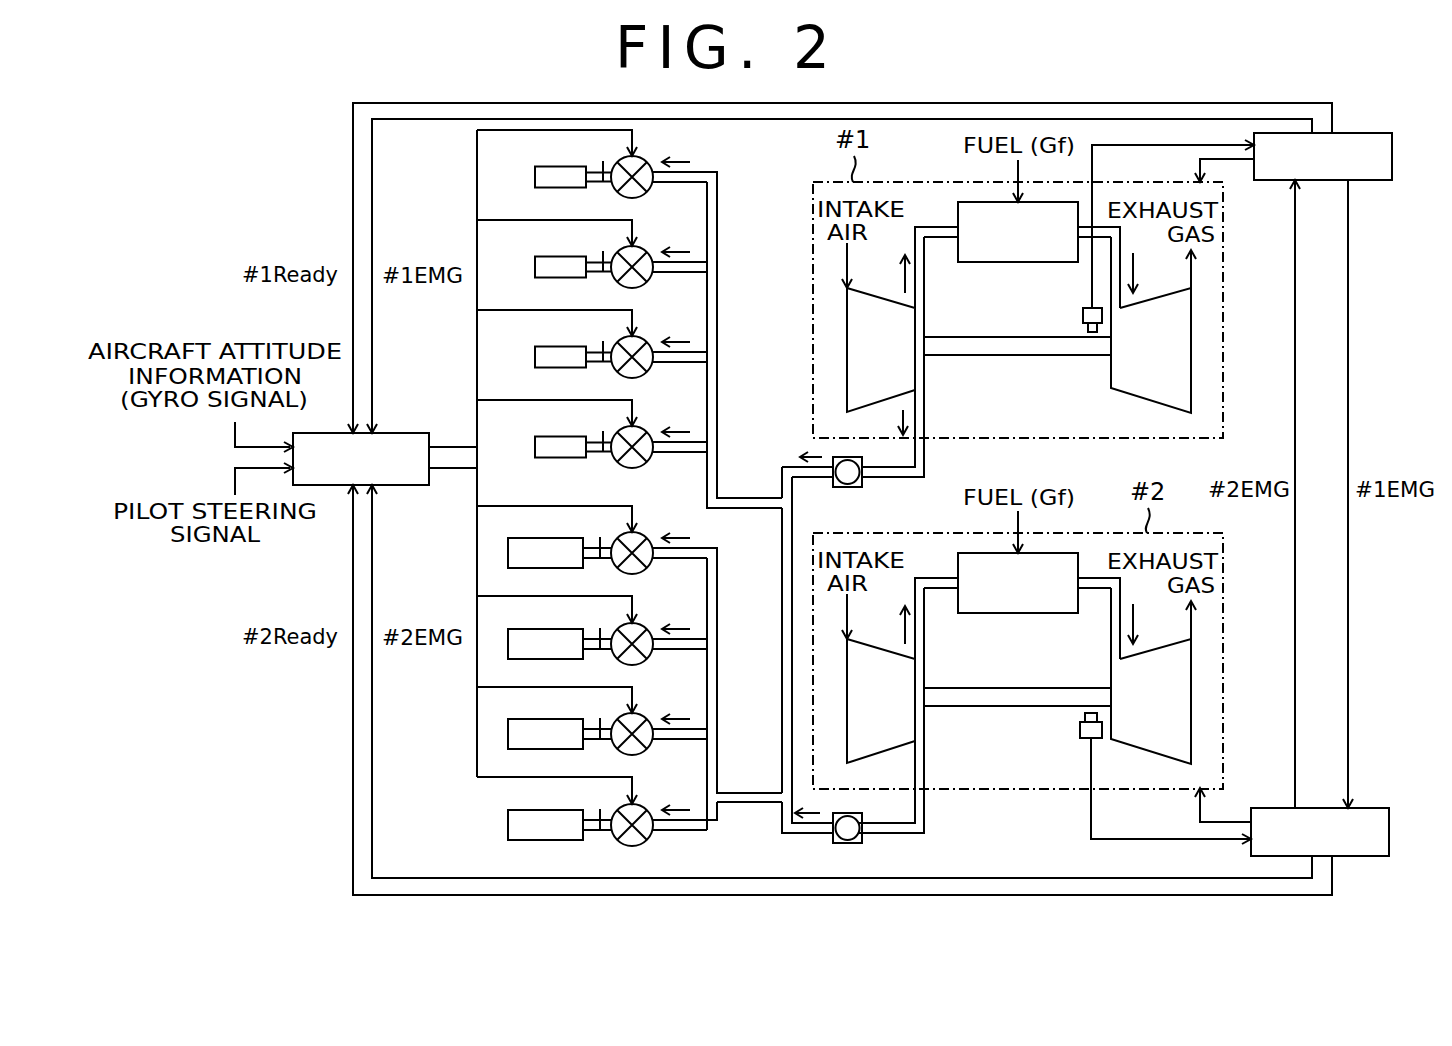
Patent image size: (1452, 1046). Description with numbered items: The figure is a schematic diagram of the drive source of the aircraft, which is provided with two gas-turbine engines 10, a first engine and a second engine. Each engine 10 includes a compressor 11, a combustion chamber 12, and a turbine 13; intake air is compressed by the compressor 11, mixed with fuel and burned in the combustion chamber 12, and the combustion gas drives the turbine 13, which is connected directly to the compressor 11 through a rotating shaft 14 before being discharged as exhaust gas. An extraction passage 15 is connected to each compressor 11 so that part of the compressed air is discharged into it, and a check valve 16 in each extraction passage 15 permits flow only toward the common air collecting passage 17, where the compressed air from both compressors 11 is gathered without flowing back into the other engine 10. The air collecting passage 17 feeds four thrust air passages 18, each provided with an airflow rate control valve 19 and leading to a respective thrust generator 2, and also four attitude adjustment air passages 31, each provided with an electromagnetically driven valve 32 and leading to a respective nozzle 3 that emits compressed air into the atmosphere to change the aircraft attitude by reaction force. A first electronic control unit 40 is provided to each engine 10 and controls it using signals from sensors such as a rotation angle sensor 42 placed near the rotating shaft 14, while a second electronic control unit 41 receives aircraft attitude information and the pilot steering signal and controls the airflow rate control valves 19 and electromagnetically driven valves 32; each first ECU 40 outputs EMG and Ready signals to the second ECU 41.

The thrust generator 2 is at (525, 562).
The nozzle 3 is at (535, 186).
The gas-turbine engine 10 is at (933, 182).
The compressor 11 is at (878, 293).
The combustion chamber 12 is at (982, 262).
The turbine 13 is at (1162, 292).
The rotating shaft 14 is at (1080, 356).
The extraction passage 15 is at (924, 407).
The check valve 16 is at (855, 487).
The air collecting passage 17 is at (793, 512).
The thrust air passage 18 is at (600, 669).
The airflow rate control valve 19 is at (647, 568).
The attitude adjustment air passage 31 is at (601, 291).
The electromagnetically driven valve 32 is at (647, 192).
The first electronic control unit 40 is at (1392, 158).
The second electronic control unit 41 is at (413, 478).
The rotation angle sensor 42 is at (1083, 315).